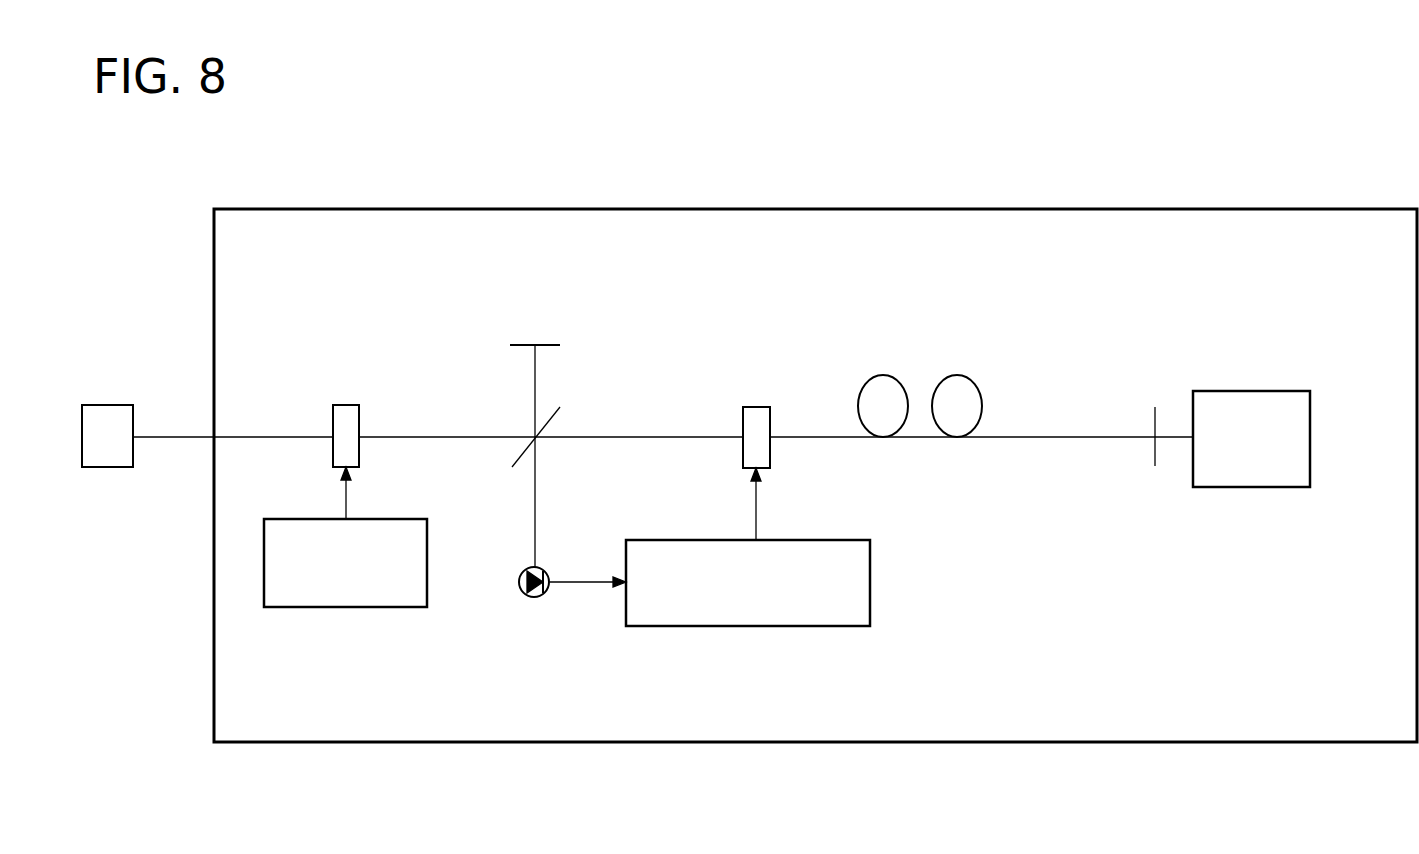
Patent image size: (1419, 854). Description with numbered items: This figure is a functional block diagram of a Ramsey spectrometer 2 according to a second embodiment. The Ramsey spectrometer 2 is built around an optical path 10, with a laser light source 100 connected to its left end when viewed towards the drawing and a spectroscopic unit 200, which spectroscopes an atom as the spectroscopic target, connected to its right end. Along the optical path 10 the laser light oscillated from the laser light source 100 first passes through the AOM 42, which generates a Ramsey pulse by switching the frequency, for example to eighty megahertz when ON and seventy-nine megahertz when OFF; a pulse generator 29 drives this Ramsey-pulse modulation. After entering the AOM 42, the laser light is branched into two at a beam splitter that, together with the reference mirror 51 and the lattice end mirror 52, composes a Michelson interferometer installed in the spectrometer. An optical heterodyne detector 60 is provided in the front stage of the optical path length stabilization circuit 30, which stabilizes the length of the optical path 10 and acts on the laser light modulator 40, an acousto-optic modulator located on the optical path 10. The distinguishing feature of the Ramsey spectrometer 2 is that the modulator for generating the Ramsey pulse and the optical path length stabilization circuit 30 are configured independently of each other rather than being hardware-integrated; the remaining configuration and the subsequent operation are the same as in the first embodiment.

The Ramsey spectrometer 2 is at (307, 209).
The laser light source 100 is at (100, 467).
The AOM 42 is at (359, 423).
The pulse generator 29 is at (377, 607).
The reference mirror 51 is at (552, 345).
The optical heterodyne detector 60 is at (527, 600).
The optical path length stabilization circuit 30 is at (792, 626).
The laser light modulator 40 is at (770, 427).
The optical path 10 is at (995, 437).
The lattice end mirror 52 is at (1155, 420).
The spectroscopic unit 200 is at (1255, 391).